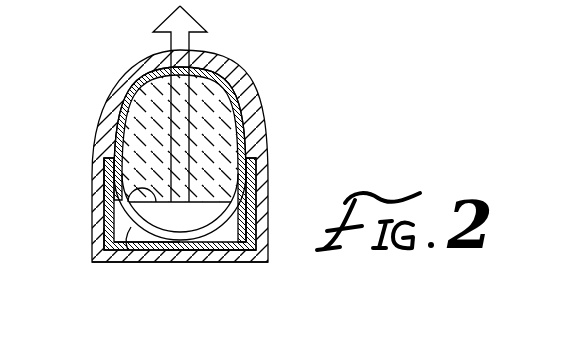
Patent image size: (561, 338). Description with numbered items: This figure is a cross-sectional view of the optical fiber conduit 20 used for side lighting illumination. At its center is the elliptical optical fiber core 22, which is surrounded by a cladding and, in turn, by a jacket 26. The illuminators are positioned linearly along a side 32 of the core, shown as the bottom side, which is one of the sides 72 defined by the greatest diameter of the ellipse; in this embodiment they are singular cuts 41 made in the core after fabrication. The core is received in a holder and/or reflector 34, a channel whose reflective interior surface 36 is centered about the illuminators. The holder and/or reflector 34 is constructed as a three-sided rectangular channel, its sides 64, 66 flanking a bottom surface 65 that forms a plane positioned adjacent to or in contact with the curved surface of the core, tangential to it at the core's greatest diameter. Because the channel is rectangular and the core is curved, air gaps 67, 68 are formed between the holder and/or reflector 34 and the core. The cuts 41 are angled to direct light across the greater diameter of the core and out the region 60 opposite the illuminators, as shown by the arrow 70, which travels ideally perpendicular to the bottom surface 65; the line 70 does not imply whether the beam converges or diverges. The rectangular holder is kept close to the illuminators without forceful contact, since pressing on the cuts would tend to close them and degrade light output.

The optical fiber conduit 20 is at (262, 101).
The optical fiber core 22 is at (208, 122).
The jacket 26 is at (272, 263).
The side of the optical fiber core 32 is at (184, 243).
The holder and/or reflector 34 is at (258, 164).
The reflective interior surface 36 is at (122, 238).
The cuts 41 is at (130, 190).
The region 60 is at (152, 76).
The side of the rectangular channel 64 is at (104, 170).
The bottom surface of the holder and/or reflector 65 is at (158, 250).
The side of the rectangular channel 66 is at (262, 204).
The air gap 67 is at (130, 229).
The air gap 68 is at (236, 226).
The arrow (line) 70 is at (197, 23).
The side of the oval core 72 is at (212, 251).